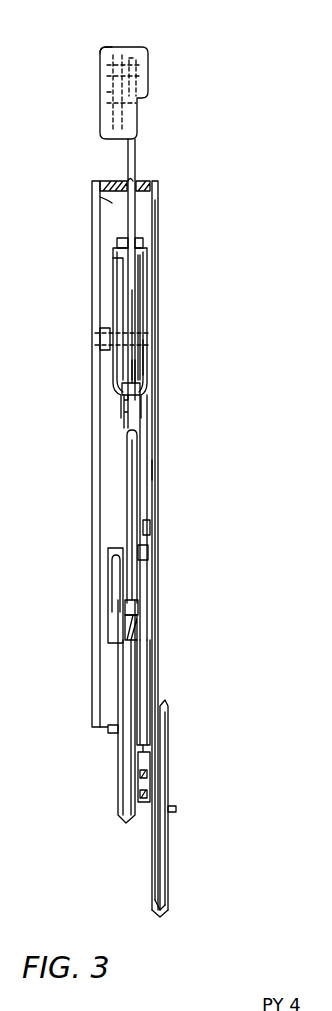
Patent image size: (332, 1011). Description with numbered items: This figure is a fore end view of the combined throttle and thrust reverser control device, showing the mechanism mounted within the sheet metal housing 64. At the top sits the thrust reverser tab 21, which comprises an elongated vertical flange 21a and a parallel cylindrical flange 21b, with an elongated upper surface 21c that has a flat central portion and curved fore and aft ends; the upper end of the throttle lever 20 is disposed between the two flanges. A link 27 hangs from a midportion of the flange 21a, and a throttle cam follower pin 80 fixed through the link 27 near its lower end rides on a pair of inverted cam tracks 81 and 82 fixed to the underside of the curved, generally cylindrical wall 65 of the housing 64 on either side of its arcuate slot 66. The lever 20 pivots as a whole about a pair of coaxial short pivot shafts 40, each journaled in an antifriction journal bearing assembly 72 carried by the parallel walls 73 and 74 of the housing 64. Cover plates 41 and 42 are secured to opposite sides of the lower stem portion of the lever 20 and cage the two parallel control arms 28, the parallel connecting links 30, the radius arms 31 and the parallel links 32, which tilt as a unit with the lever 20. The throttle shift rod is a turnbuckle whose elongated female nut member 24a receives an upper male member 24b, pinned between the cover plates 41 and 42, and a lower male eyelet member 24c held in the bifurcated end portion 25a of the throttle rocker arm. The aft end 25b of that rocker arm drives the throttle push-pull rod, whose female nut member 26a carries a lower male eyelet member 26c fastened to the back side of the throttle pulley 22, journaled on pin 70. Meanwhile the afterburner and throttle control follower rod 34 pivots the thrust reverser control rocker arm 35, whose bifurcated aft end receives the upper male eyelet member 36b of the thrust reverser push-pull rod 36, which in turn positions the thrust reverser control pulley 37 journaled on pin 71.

The throttle lever 20 is at (134, 370).
The thrust reverser tab 21 is at (148, 70).
The elongated vertical flange 21a is at (108, 92).
The cylindrical flange 21b is at (146, 90).
The upper surface 21c is at (112, 45).
The throttle pulley 22 is at (169, 722).
The elongated female nut member 24a is at (141, 492).
The male member 24b is at (123, 414).
The male eyelet member 24c is at (131, 628).
The bifurcated end portion 25a is at (139, 610).
The aft end 25b is at (143, 556).
The elongated female nut member 26a is at (146, 667).
The male eyelet member 26c is at (146, 765).
The link 27 is at (136, 160).
The parallel control arms 28 is at (133, 318).
The parallel connecting links 30 is at (141, 300).
The radius arms 31 is at (139, 285).
The parallel links 32 is at (137, 373).
The afterburner and throttle control follower rod 34 is at (140, 450).
The thrust reverser control rocker arm 35 is at (115, 572).
The thrust reverser push-pull rod 36 is at (148, 793).
The male eyelet member 36b is at (148, 528).
The thrust reverser control pulley 37 is at (127, 685).
The short pivot shafts 40 is at (142, 356).
The cover plate 41 is at (118, 280).
The cover plate 42 is at (147, 265).
The sheet metal housing 64 is at (170, 470).
The curved cylindrical wall 65 is at (113, 183).
The arcuate slot 66 is at (128, 178).
The pin 70 is at (172, 811).
The pin 71 is at (113, 730).
The antifriction journal bearing assembly 72 is at (95, 332).
The wall 73 is at (97, 232).
The wall 74 is at (155, 236).
The throttle cam follower pin 80 is at (140, 240).
The cam track 81 is at (100, 197).
The cam track 82 is at (150, 190).